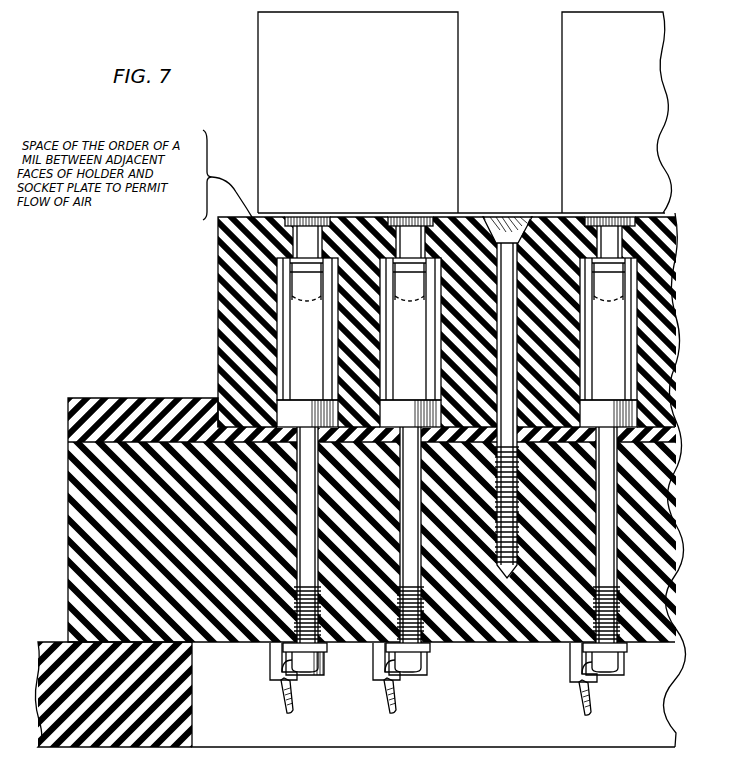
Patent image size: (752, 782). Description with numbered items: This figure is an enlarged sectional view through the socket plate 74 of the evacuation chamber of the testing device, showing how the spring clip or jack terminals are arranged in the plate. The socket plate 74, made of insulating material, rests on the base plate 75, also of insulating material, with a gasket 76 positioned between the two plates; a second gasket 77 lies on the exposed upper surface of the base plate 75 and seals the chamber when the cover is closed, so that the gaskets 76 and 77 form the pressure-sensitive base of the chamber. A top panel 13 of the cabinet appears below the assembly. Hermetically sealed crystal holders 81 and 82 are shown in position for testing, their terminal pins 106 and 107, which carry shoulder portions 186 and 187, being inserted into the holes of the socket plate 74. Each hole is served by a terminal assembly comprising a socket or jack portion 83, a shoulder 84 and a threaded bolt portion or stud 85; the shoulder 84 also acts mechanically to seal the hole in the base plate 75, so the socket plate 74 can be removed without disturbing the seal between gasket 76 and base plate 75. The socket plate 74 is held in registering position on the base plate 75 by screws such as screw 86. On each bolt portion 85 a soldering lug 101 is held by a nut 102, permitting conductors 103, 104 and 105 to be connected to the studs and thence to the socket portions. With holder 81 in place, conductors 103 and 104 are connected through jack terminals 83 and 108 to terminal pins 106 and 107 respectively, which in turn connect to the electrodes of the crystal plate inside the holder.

The top panel 13 is at (94, 748).
The socket plate 74 is at (218, 297).
The base plate 75 is at (68, 560).
The gasket 76 is at (212, 428).
The second gasket 77 is at (134, 398).
The hermetically sealed holder 81 is at (450, 120).
The hermetically sealed holder 82 is at (563, 120).
The socket or jack portion 83 is at (307, 329).
The shoulder 84 is at (307, 413).
The threaded bolt portion 85 is at (298, 552).
The screw 86 is at (508, 230).
The soldering lug 101 is at (270, 673).
The nut 102 is at (320, 666).
The conductor 103 is at (279, 704).
The conductor 104 is at (397, 702).
The conductor 105 is at (579, 700).
The terminal pin 106 is at (304, 232).
The terminal pin 107 is at (409, 232).
The jack terminal 108 is at (410, 342).
The shoulder portion 186 is at (292, 217).
The shoulder portion 187 is at (389, 217).